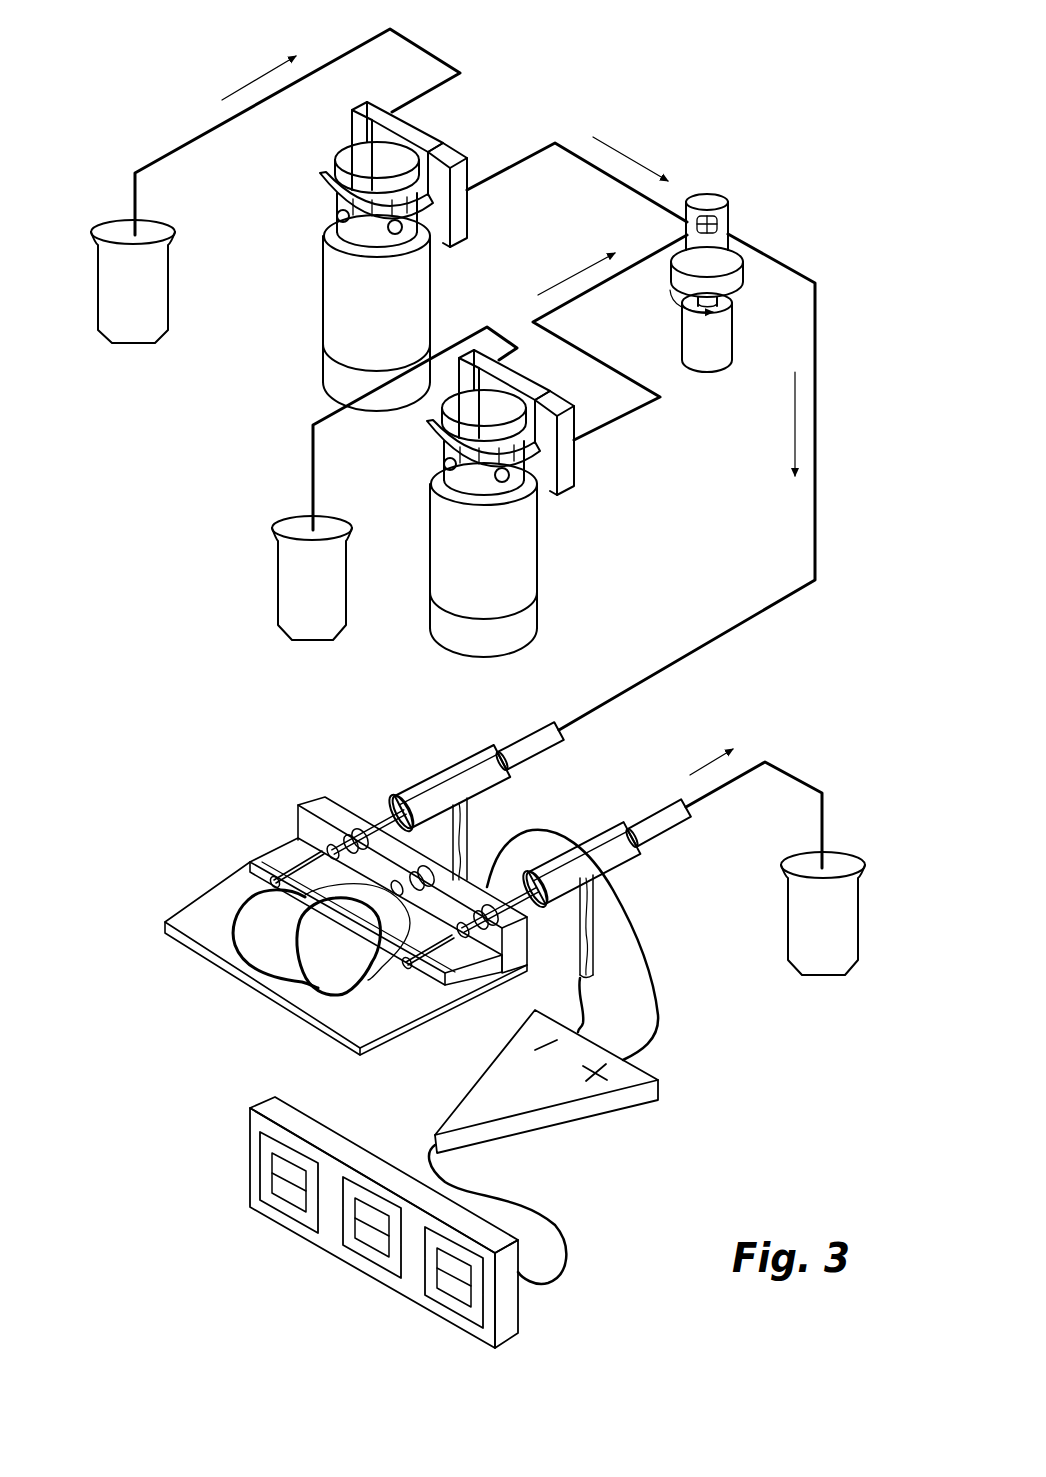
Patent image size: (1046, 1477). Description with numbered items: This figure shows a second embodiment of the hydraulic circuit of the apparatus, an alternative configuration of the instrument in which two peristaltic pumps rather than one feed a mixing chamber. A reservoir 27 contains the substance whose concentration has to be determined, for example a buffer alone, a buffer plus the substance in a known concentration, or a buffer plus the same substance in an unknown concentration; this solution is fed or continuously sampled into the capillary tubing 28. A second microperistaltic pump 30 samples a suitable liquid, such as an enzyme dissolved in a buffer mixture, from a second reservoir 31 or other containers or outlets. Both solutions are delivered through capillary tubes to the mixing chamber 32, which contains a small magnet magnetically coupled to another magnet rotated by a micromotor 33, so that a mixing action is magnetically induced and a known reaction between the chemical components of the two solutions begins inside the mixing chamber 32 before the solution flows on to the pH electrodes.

The reservoir 27 is at (133, 345).
The capillary tubing 28 is at (423, 48).
The microperistaltic pump 30 is at (537, 560).
The reservoir 31 is at (315, 642).
The mixing chamber 32 is at (729, 218).
The micromotor 33 is at (708, 372).